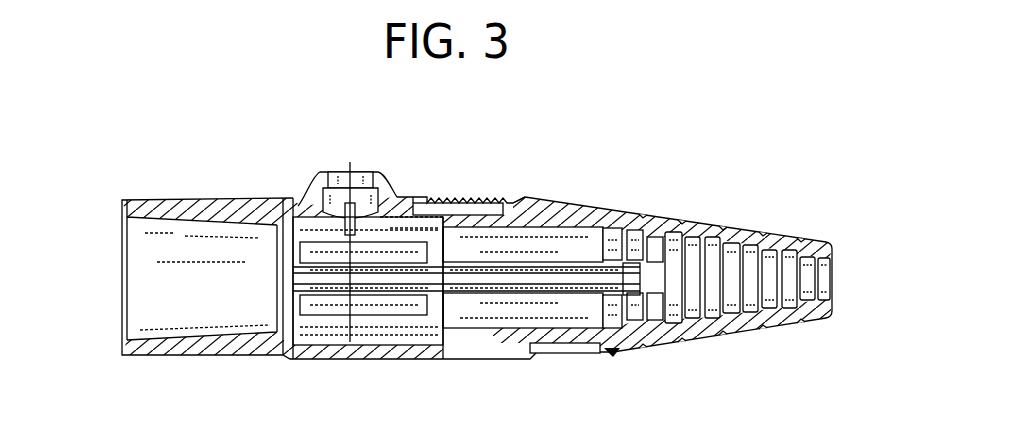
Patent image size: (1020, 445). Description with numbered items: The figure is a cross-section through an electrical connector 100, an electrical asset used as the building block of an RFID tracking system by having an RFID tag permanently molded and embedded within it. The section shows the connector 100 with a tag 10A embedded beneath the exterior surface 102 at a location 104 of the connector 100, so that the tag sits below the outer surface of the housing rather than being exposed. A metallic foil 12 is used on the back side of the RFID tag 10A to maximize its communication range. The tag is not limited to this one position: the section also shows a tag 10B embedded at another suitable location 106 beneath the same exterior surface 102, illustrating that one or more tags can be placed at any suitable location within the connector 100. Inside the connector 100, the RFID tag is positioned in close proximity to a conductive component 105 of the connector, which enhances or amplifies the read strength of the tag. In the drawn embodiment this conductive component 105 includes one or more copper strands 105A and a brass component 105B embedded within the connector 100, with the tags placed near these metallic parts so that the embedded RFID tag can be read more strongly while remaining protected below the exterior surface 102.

The electrical connector 100 is at (238, 156).
The exterior surface 102 is at (543, 200).
The location 104 is at (400, 190).
The conductive component 105 is at (307, 230).
The copper strands 105A is at (367, 282).
The brass component 105B is at (400, 318).
The tag 10A is at (470, 198).
The tag 10B is at (563, 344).
The metallic foil 12 is at (513, 201).
The location 106 is at (616, 354).